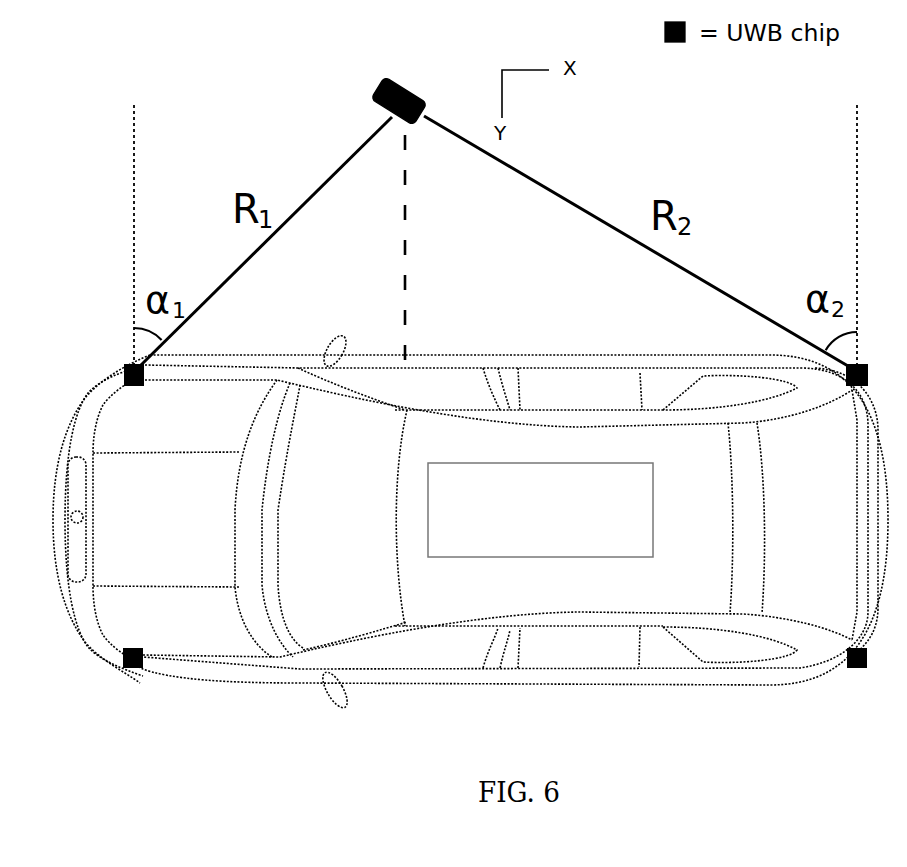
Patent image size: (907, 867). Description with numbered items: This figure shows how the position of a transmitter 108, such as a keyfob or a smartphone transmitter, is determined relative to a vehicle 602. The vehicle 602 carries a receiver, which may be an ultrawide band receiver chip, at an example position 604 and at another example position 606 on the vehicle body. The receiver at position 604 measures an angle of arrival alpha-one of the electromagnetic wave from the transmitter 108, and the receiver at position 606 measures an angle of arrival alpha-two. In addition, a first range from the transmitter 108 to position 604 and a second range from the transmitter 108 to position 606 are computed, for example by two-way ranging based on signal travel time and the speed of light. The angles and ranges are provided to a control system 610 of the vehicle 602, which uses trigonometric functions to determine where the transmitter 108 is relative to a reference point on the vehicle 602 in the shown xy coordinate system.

The transmitter 108 is at (399, 82).
The vehicle 602 is at (470, 521).
The position 604 is at (140, 393).
The position 606 is at (869, 393).
The control system 610 is at (540, 510).